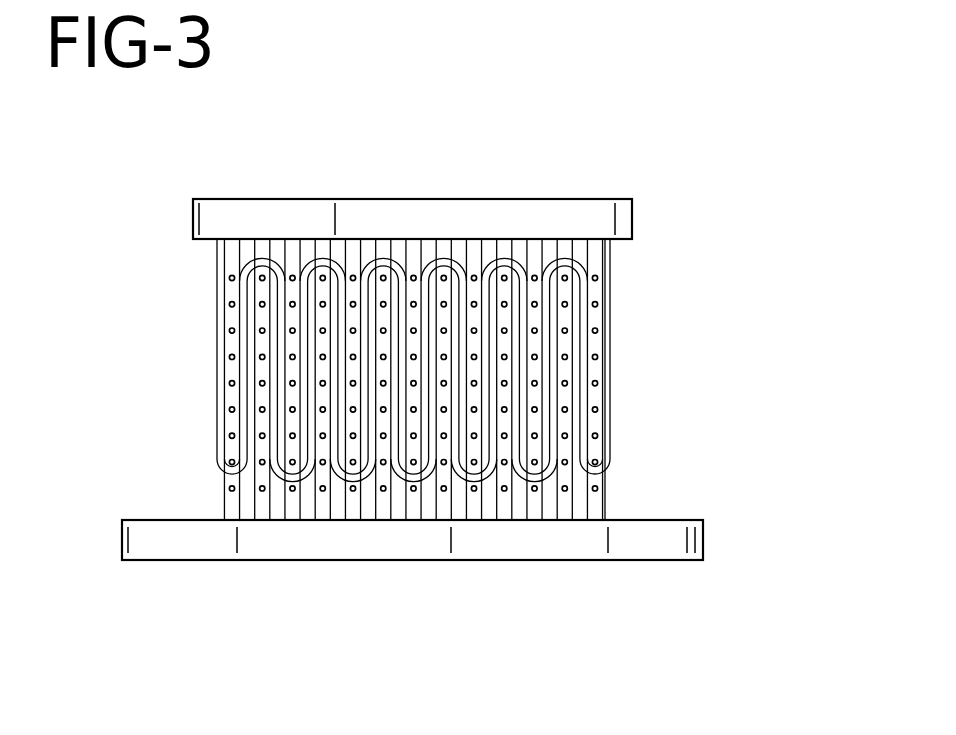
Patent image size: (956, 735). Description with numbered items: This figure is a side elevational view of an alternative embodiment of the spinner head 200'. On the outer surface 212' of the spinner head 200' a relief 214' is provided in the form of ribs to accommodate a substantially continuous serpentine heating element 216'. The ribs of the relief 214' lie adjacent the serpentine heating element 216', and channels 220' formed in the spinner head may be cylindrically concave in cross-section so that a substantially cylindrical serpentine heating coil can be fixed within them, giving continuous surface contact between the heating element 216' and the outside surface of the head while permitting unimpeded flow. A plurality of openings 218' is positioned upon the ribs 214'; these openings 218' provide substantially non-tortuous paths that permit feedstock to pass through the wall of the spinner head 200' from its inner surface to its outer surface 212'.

The spinner head 200' is at (452, 338).
The outer surface 212' is at (517, 379).
The relief 214' is at (413, 457).
The serpentine heating element 216' is at (413, 280).
The openings 218' is at (439, 383).
The channels 220' is at (413, 465).